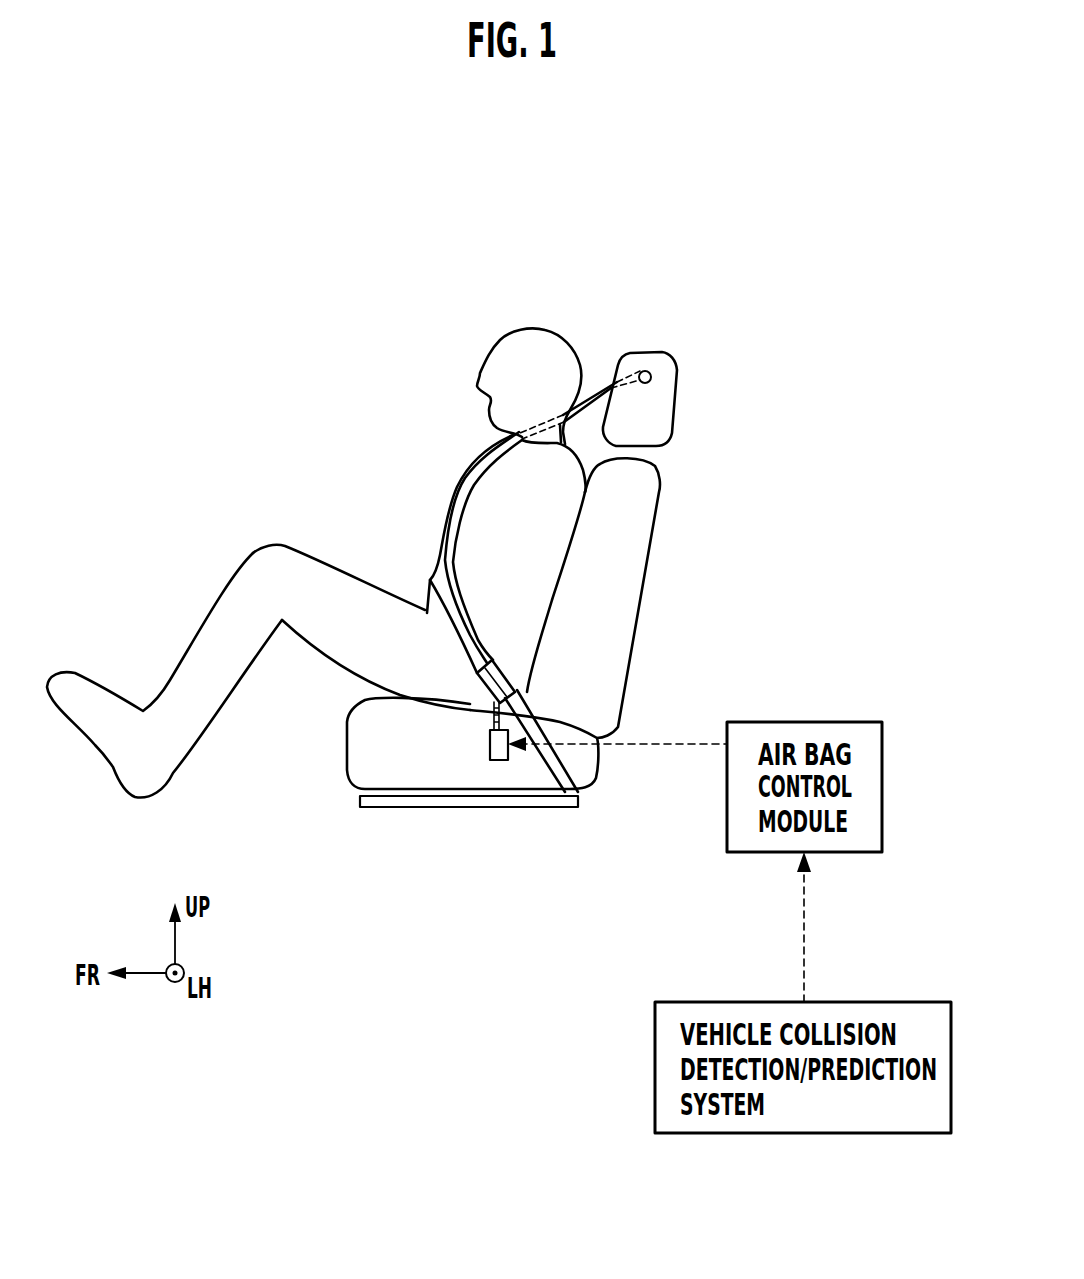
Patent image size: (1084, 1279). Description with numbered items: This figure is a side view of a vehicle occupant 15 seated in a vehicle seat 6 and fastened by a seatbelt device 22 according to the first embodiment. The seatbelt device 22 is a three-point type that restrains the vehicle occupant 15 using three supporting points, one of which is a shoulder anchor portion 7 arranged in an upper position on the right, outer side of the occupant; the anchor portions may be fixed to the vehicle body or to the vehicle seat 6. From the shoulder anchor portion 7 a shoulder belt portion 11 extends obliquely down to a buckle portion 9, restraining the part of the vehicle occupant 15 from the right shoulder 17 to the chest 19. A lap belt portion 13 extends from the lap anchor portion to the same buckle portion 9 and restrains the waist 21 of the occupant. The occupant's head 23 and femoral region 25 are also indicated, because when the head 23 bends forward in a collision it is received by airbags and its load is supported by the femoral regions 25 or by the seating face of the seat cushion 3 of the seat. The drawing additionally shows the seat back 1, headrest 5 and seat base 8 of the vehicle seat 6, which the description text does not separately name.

The seat back 1 is at (630, 550).
The seat cushion 3 is at (412, 763).
The headrest 5 is at (667, 405).
The vehicle seat 6 is at (560, 622).
The shoulder anchor portion 7 is at (646, 372).
The seat base 8 is at (443, 800).
The buckle portion 9 is at (497, 762).
The shoulder belt portion 11 is at (493, 448).
The lap belt portion 13 is at (465, 625).
The vehicle occupant 15 is at (397, 525).
The right shoulder 17 is at (507, 463).
The chest 19 is at (473, 518).
The waist 21 is at (513, 652).
The seatbelt device 22 is at (598, 384).
The head 23 is at (535, 345).
The femoral region 25 is at (337, 637).